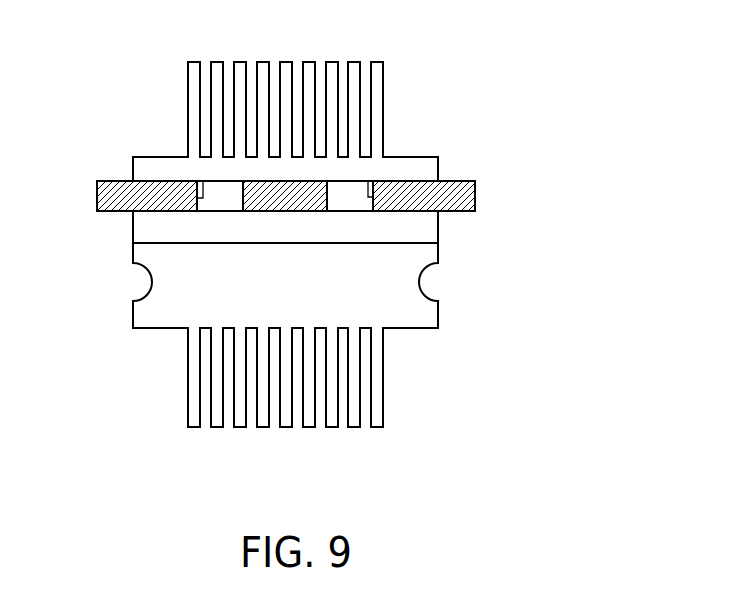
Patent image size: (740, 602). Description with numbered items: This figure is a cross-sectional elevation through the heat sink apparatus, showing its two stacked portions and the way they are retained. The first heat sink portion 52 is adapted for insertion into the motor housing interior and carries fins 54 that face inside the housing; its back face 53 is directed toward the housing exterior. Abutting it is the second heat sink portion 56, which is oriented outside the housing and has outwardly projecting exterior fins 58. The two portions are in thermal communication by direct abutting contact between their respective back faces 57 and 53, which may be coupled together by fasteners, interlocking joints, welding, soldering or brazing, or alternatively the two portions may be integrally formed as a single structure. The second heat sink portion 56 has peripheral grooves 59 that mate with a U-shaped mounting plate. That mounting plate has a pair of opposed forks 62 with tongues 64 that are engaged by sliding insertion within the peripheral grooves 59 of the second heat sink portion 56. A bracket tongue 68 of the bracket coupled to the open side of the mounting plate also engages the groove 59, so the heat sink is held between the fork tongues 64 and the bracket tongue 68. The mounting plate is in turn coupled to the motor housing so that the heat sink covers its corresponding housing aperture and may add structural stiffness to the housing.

The first heat sink portion 52 is at (133, 308).
The back face 53 is at (412, 238).
The fins 54 is at (331, 412).
The second heat sink portion 56 is at (383, 157).
The back face 57 is at (220, 243).
The exterior fins 58 is at (383, 70).
The peripheral grooves 59 is at (357, 188).
The forks 62 is at (108, 192).
The tongues 64 is at (203, 190).
The bracket tongue 68 is at (278, 198).